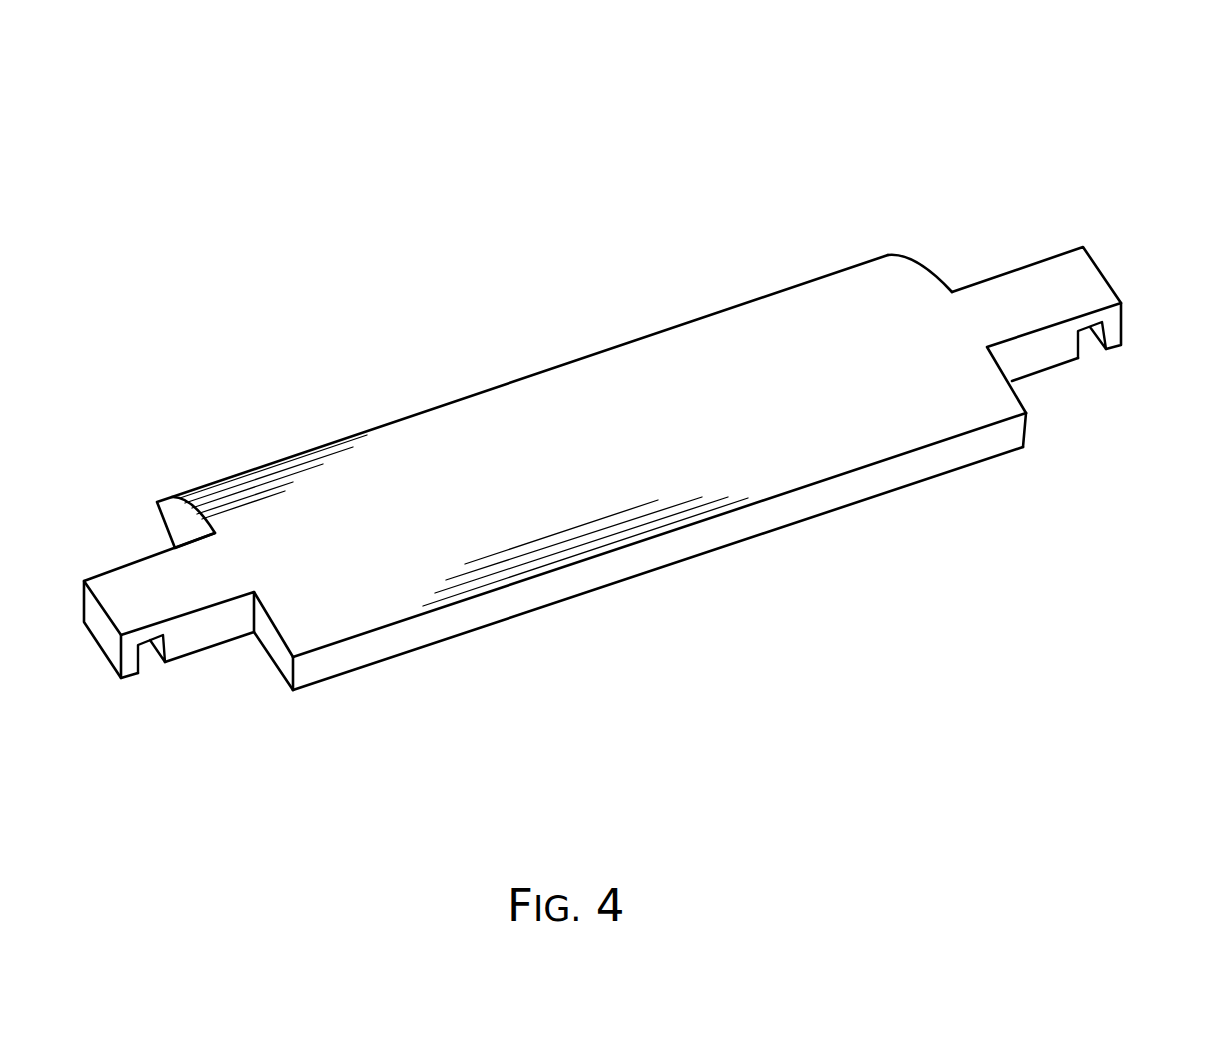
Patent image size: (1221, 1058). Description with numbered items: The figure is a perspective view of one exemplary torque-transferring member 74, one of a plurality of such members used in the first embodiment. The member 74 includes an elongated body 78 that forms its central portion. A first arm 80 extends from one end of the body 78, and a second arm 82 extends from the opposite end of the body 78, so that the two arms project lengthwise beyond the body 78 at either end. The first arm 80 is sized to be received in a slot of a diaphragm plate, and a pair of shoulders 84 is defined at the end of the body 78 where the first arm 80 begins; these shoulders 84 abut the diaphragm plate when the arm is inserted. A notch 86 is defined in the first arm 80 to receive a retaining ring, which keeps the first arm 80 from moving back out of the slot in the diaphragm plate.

The member 74 is at (697, 175).
The body 78 is at (478, 432).
The first arm 80 is at (1070, 287).
The second arm 82 is at (132, 580).
The shoulders 84 is at (898, 272).
The notch 86 is at (1098, 350).